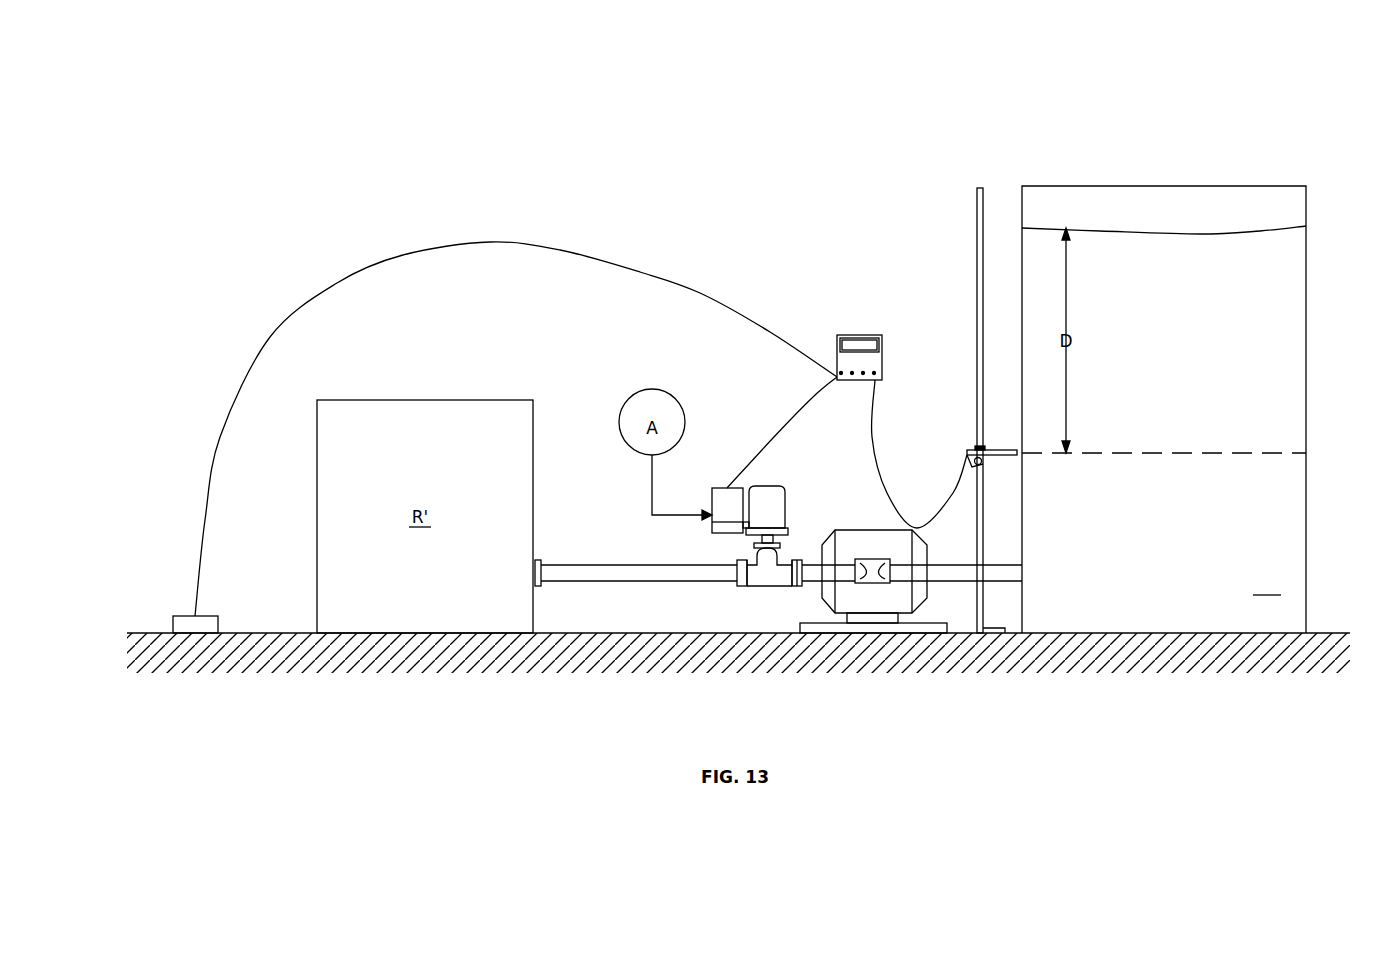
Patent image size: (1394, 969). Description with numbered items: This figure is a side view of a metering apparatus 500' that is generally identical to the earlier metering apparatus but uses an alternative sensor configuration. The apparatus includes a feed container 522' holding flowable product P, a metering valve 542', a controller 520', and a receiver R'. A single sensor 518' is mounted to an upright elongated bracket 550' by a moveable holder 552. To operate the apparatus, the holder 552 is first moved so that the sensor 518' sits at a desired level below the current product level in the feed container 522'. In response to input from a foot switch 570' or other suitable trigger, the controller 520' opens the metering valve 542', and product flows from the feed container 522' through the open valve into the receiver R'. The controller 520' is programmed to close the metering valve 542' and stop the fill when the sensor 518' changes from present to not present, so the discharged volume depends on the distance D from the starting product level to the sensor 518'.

The metering apparatus 500' is at (686, 124).
The upright elongated bracket 550' is at (964, 406).
The controller 520' is at (843, 335).
The sensor 518' is at (972, 432).
The moveable holder 552 is at (974, 462).
The metering valve 542' is at (790, 511).
The foot switch 570' is at (170, 606).
The feed container 522' is at (1195, 409).